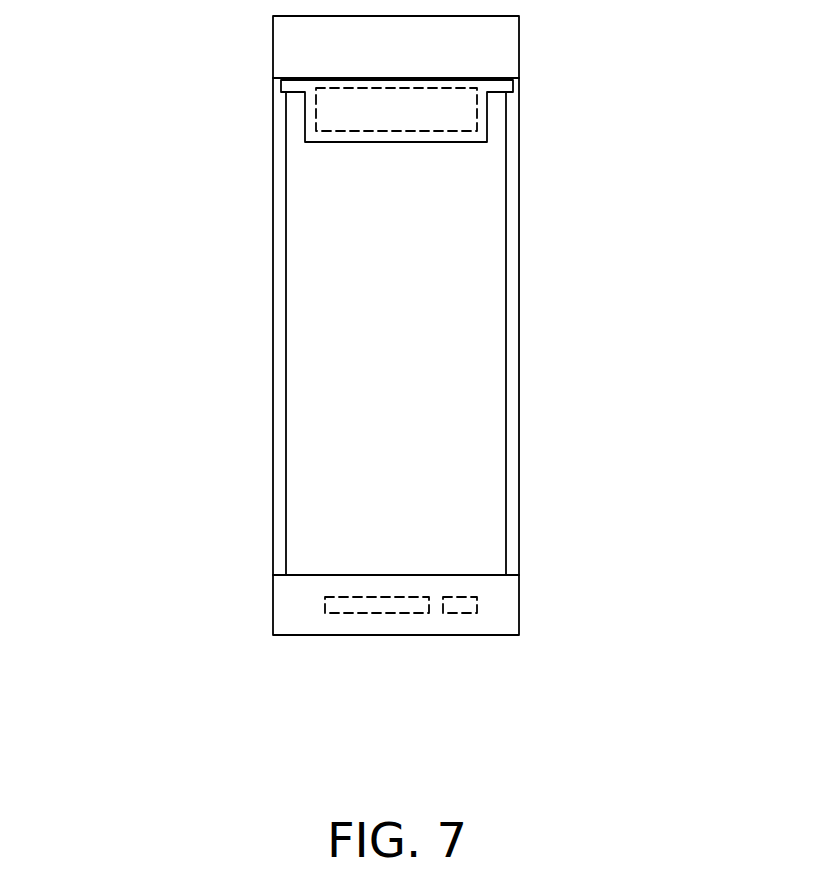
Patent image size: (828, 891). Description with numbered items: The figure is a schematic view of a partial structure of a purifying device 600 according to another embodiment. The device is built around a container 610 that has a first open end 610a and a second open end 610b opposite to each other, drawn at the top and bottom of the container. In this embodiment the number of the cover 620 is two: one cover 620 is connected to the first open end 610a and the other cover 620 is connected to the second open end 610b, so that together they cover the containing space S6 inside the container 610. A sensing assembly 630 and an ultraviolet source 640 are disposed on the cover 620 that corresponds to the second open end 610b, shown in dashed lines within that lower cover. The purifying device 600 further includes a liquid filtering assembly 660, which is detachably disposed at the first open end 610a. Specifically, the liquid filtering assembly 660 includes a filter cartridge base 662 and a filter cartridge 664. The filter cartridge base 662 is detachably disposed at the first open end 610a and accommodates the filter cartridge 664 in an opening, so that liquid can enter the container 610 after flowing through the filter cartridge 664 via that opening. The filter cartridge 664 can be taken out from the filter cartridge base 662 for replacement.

The purifying device 600 is at (670, 738).
The container 610 is at (280, 270).
The first open end 610a is at (237, 78).
The second open end 610b is at (233, 595).
The cover 620 is at (280, 43).
The containing space S6 is at (335, 352).
The sensing assembly 630 is at (460, 597).
The ultraviolet source 640 is at (352, 597).
The liquid filtering assembly 660 is at (608, 105).
The filter cartridge base 662 is at (488, 115).
The filter cartridge 664 is at (433, 132).